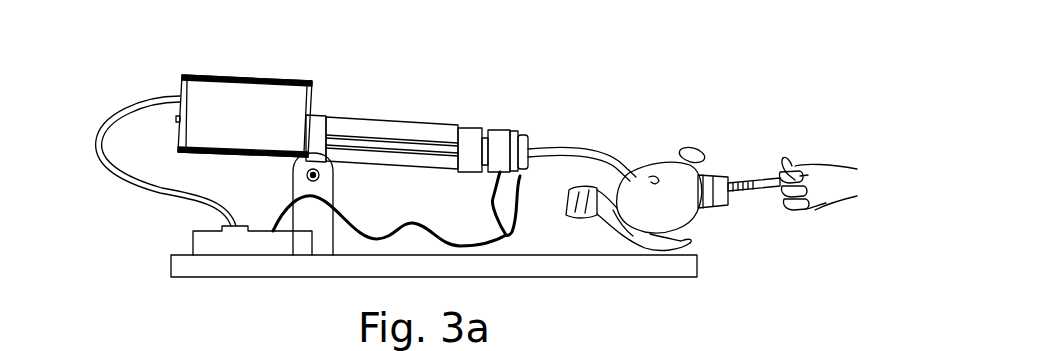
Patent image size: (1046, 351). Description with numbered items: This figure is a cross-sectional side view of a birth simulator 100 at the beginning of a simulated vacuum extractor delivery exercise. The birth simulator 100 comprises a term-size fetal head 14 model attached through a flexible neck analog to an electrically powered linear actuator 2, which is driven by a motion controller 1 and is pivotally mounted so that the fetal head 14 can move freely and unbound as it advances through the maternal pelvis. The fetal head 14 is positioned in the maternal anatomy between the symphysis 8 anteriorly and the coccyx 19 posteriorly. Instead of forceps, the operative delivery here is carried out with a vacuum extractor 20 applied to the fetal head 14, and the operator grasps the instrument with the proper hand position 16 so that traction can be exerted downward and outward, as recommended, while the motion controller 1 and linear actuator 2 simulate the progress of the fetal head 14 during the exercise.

The birth simulator 100 is at (555, 78).
The motion controller 1 is at (220, 245).
The electrically powered linear actuator 2 is at (338, 92).
The fetal head 14 is at (689, 215).
The coccyx 19 is at (678, 248).
The symphysis 8 is at (698, 148).
The vacuum extractor 20 is at (728, 204).
The hand position 16 is at (852, 178).